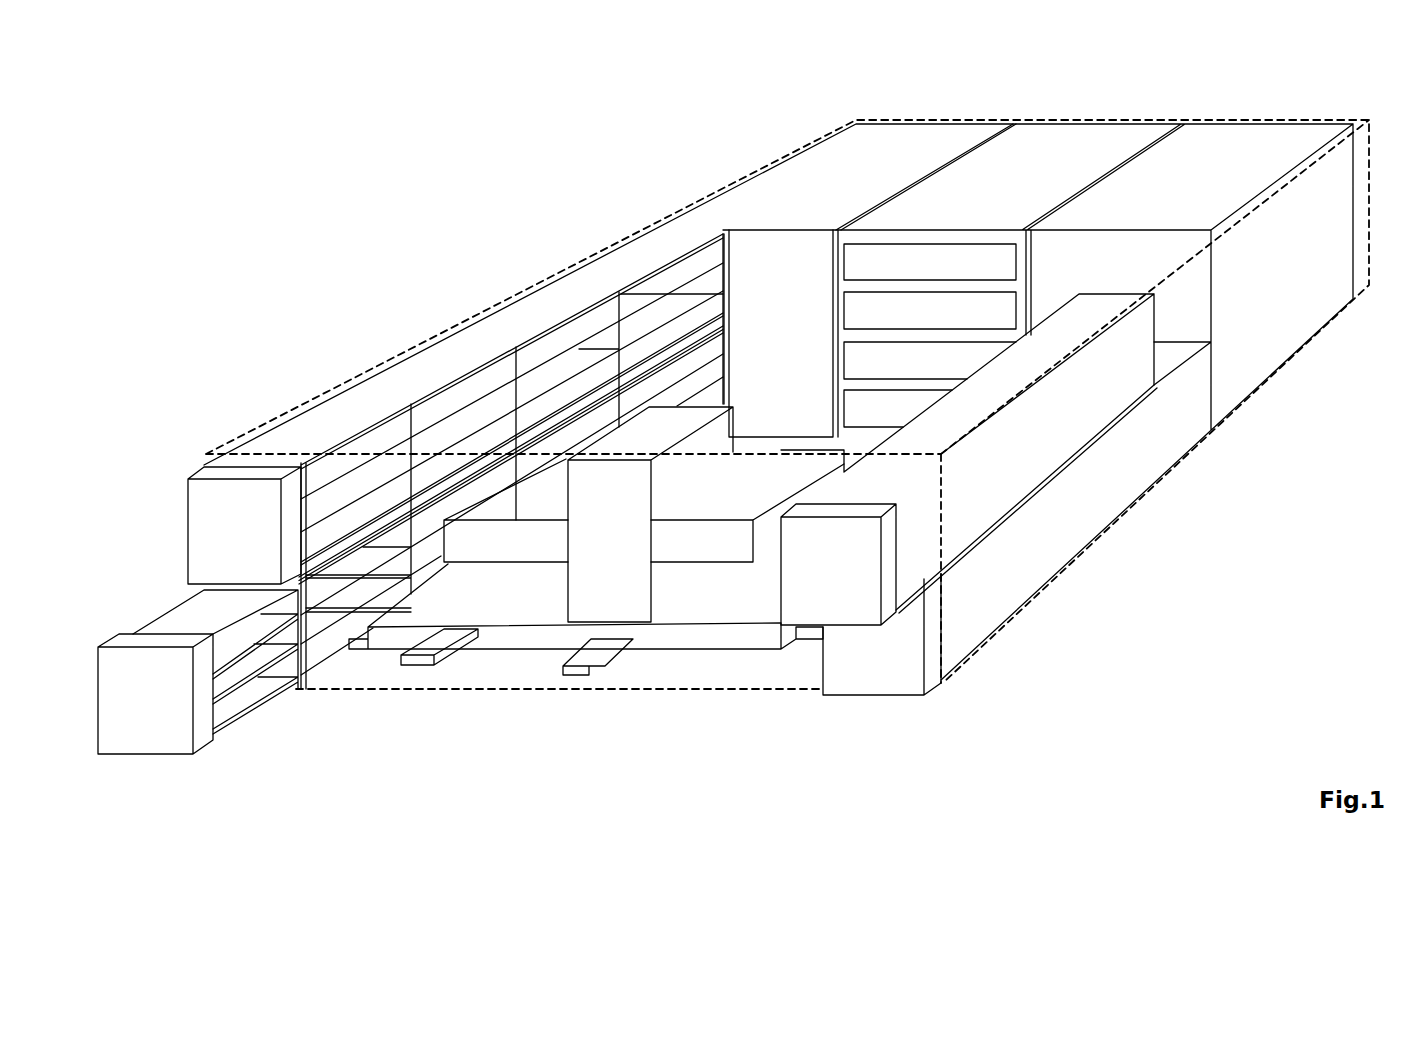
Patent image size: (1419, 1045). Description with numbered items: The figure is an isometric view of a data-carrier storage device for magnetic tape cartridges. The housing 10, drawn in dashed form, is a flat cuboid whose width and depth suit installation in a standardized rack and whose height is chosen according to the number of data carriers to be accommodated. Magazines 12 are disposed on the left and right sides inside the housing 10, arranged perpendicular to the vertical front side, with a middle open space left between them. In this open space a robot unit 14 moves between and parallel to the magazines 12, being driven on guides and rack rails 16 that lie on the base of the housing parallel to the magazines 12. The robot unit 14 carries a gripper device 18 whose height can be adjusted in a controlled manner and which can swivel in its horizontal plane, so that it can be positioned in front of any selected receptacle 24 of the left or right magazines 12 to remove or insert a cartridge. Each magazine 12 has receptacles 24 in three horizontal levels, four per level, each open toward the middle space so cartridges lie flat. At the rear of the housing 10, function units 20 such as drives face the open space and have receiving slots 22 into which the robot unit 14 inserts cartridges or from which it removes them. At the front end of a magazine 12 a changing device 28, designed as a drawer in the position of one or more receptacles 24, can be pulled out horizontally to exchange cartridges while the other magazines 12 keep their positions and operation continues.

The housing 10 is at (690, 687).
The magazine 12 is at (383, 353).
The robot unit 14 is at (547, 632).
The guides and rack rails 16 is at (428, 655).
The gripper device 18 is at (717, 543).
The function unit 20 is at (882, 235).
The receiving slot 22 is at (893, 300).
The receptacle 24 is at (543, 348).
The changing device 28 is at (173, 603).